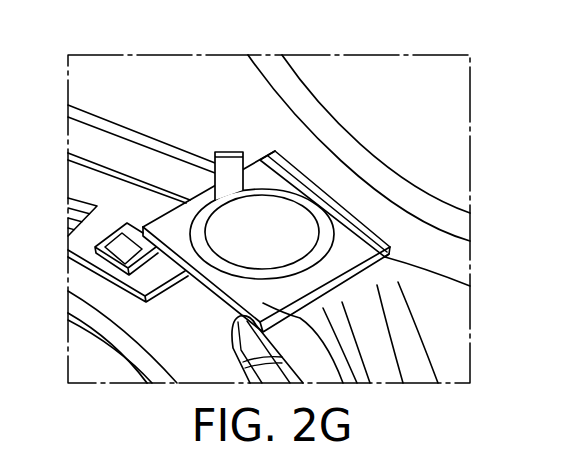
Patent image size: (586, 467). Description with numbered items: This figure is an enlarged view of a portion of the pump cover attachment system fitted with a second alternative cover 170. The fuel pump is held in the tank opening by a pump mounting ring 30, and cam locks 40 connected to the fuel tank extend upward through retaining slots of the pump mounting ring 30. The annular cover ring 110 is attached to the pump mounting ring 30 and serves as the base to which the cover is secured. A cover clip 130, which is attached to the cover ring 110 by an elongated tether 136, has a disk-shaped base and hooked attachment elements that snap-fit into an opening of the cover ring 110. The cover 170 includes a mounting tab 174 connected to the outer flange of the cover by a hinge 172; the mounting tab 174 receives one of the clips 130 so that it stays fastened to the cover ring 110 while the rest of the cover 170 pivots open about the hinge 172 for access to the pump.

The pump mounting ring 30 is at (138, 321).
The cam lock 40 is at (247, 343).
The cover ring 110 is at (114, 190).
The cover clip 130 is at (217, 233).
The tether 136 is at (227, 152).
The cover 170 is at (440, 140).
The hinge 172 is at (375, 250).
The mounting tab 174 is at (346, 384).